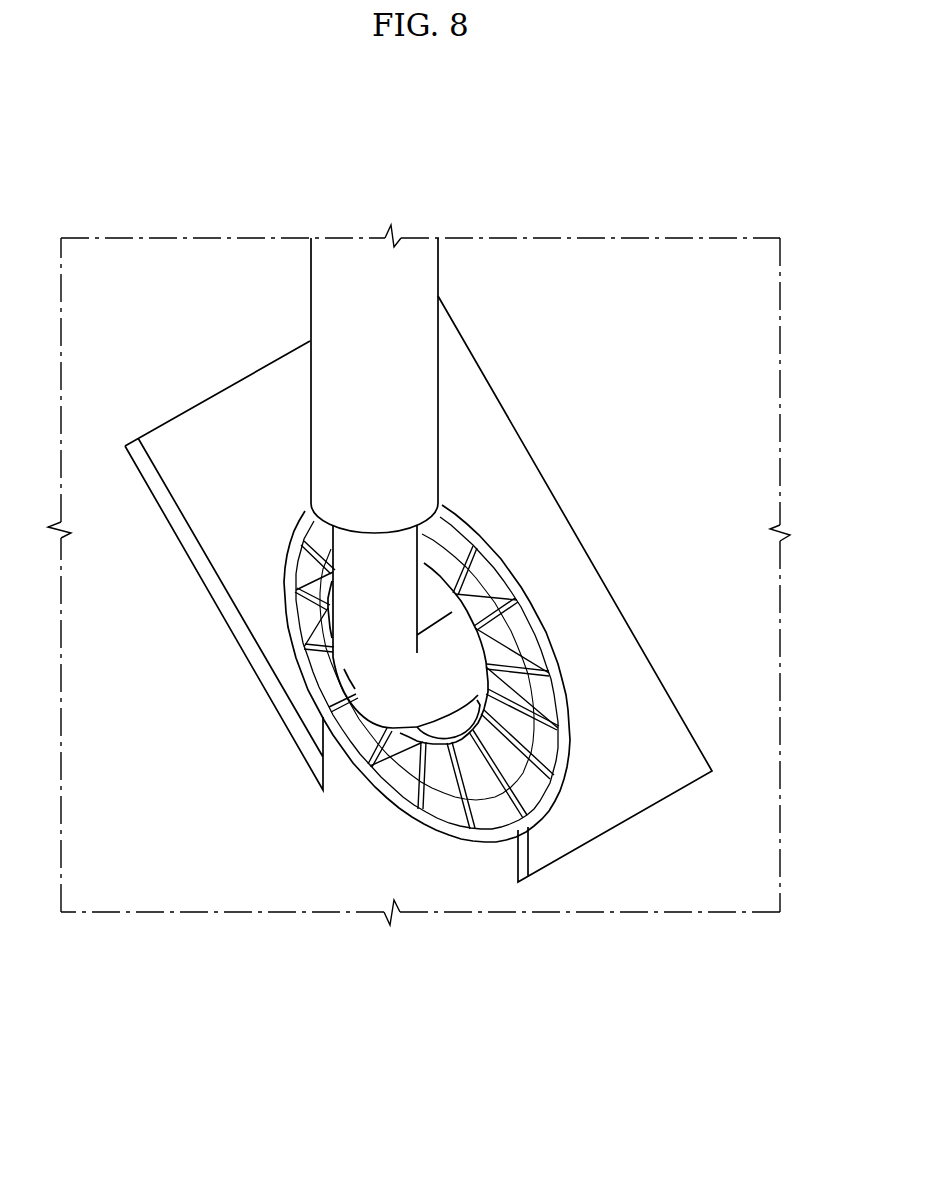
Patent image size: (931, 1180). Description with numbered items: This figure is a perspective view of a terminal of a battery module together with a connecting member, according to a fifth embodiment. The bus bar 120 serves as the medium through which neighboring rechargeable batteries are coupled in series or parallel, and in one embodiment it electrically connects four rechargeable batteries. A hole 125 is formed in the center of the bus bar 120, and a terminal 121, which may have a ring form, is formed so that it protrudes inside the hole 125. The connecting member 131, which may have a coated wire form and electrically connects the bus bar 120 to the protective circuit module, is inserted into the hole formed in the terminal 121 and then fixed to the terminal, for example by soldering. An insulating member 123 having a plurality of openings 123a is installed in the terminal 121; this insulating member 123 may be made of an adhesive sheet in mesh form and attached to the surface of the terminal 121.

The bus bar 120 is at (178, 855).
The terminal 121 is at (548, 812).
The insulating member 123 is at (440, 788).
The openings 123a is at (413, 800).
The hole 125 is at (692, 737).
The connecting member 131 is at (413, 276).